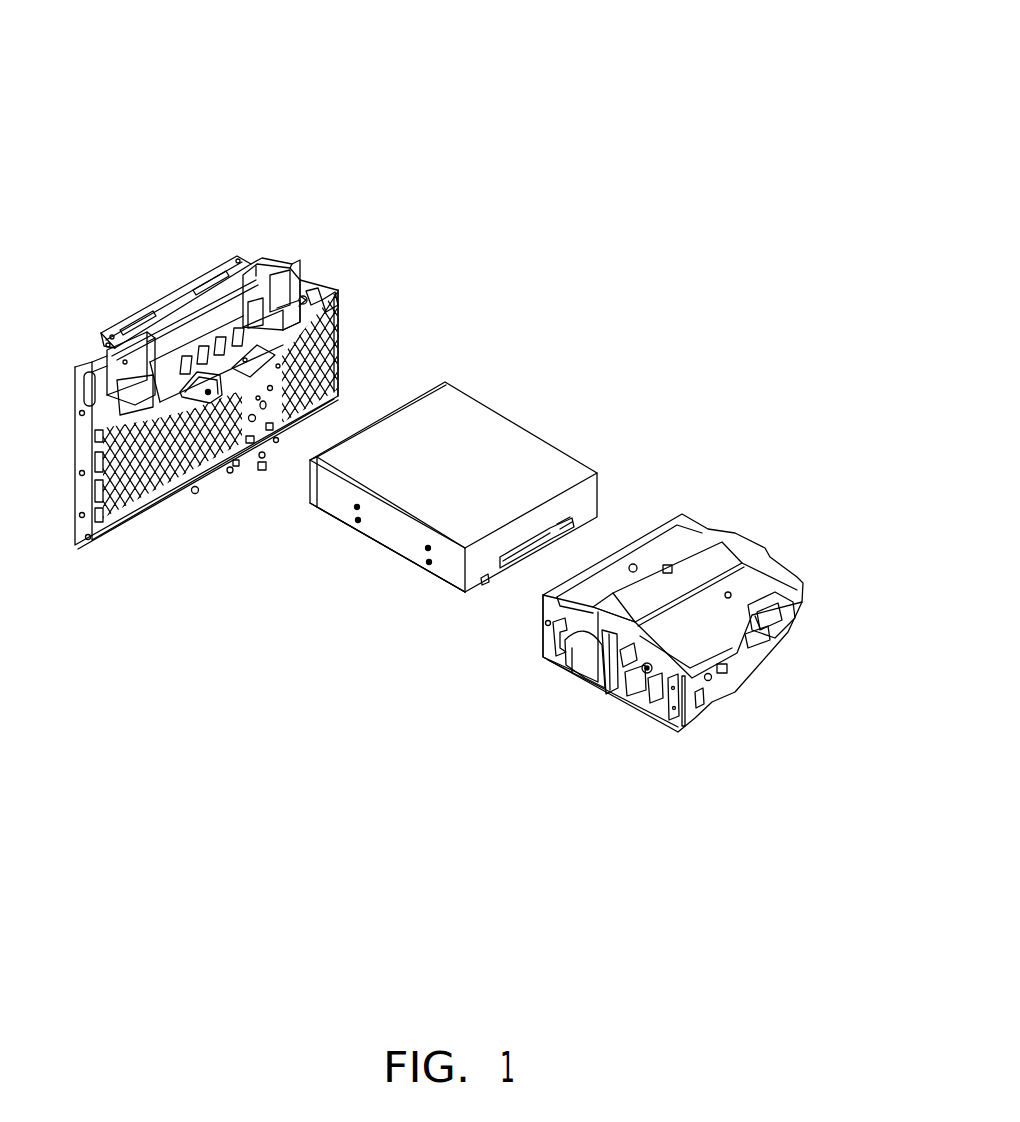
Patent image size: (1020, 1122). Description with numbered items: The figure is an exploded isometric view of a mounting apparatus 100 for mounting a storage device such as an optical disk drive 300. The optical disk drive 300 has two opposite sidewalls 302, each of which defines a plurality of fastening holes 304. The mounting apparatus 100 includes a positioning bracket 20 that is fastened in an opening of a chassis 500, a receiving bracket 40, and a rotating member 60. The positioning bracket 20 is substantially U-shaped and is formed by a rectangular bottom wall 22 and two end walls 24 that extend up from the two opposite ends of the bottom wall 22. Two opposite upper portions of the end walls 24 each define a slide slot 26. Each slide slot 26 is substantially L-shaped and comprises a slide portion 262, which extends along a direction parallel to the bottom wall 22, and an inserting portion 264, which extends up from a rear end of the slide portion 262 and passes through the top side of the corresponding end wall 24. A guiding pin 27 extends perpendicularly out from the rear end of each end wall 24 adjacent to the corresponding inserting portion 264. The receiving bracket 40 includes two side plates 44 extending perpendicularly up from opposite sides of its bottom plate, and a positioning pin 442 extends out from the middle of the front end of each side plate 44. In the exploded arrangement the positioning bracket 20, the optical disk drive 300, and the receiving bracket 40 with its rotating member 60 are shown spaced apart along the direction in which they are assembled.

The mounting apparatus 100 is at (638, 68).
The positioning bracket 20 is at (195, 282).
The bottom wall 22 is at (223, 367).
The end wall 24 is at (337, 362).
The slide slot 26 is at (312, 203).
The slide portion 262 is at (273, 270).
The inserting portion 264 is at (305, 291).
The guiding pin 27 is at (316, 297).
The chassis 500 is at (327, 298).
The optical disk drive 300 is at (485, 447).
The sidewall 302 is at (390, 532).
The fastening hole 304 is at (358, 520).
The receiving bracket 40 is at (657, 527).
The side plate 44 is at (545, 608).
The positioning pin 442 is at (543, 625).
The rotating member 60 is at (745, 543).